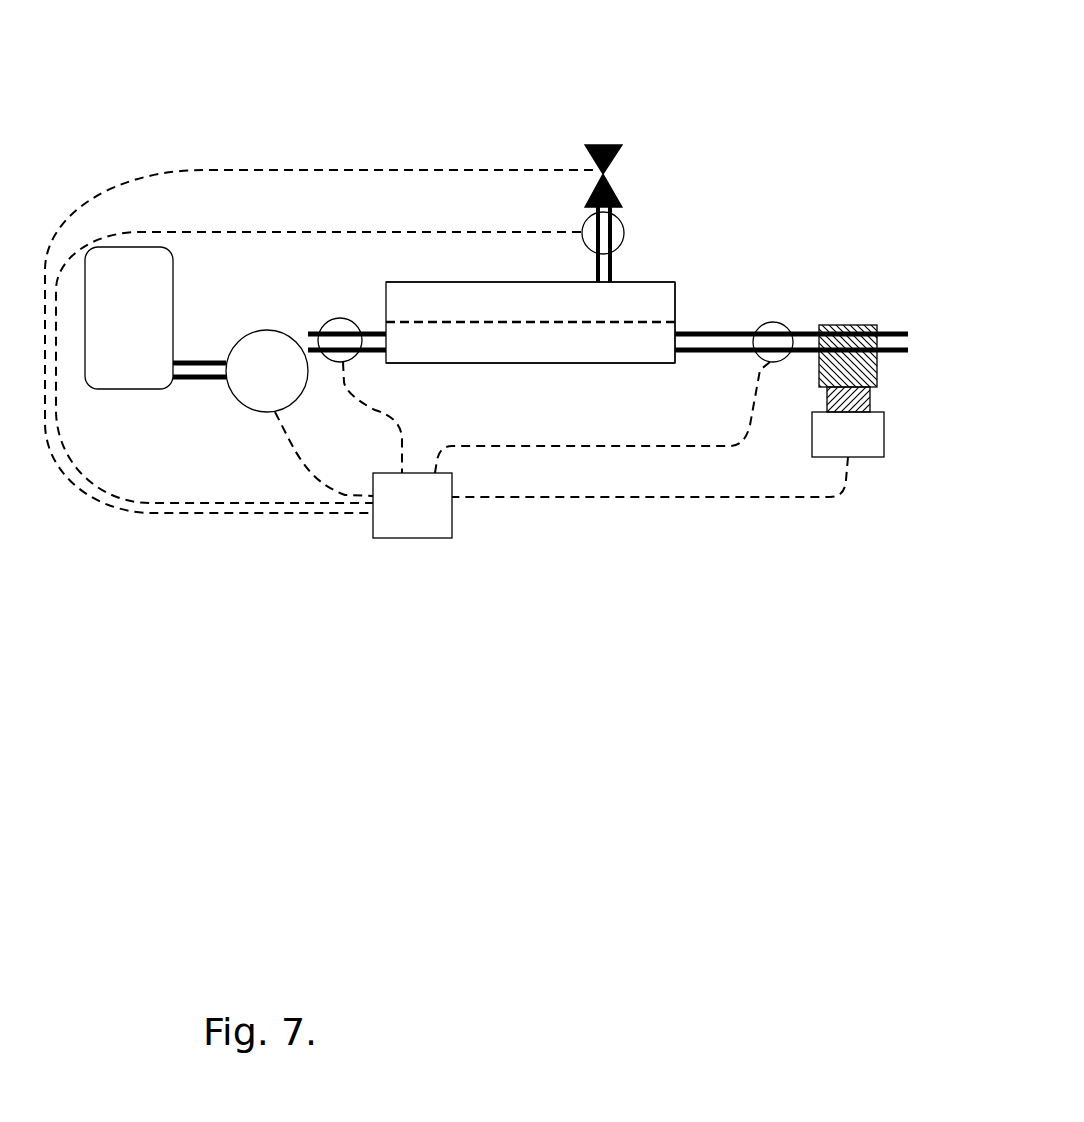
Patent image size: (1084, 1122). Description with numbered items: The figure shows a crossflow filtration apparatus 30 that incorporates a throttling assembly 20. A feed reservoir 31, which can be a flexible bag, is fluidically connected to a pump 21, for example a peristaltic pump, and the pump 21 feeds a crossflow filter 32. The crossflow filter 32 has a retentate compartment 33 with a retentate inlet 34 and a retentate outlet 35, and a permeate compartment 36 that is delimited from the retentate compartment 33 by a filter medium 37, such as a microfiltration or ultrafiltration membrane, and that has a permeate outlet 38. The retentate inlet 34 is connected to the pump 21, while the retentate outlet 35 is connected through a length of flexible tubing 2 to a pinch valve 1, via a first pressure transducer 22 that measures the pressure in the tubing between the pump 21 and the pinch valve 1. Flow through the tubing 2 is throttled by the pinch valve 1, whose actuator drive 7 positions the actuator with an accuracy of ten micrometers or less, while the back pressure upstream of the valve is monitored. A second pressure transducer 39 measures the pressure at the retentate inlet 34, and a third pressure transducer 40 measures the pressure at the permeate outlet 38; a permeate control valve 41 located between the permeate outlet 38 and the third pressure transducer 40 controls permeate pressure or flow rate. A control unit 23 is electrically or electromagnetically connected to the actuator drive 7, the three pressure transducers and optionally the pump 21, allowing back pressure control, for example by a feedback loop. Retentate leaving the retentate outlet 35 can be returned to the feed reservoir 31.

The pinch valve 1 is at (915, 384).
The flexible tubing 2 is at (720, 332).
The actuator drive 7 is at (884, 442).
The throttling assembly 20 is at (826, 131).
The pump 21 is at (266, 330).
The first pressure transducer 22 is at (770, 320).
The control unit 23 is at (373, 520).
The crossflow filtration apparatus 30 is at (511, 85).
The feed reservoir 31 is at (143, 246).
The crossflow filter 32 is at (503, 280).
The retentate compartment 33 is at (505, 342).
The retentate inlet 34 is at (370, 325).
The retentate outlet 35 is at (680, 353).
The permeate compartment 36 is at (443, 290).
The filter medium 37 is at (553, 322).
The permeate outlet 38 is at (613, 280).
The second pressure transducer 39 is at (322, 325).
The third pressure transducer 40 is at (617, 215).
The permeate control valve 41 is at (612, 177).